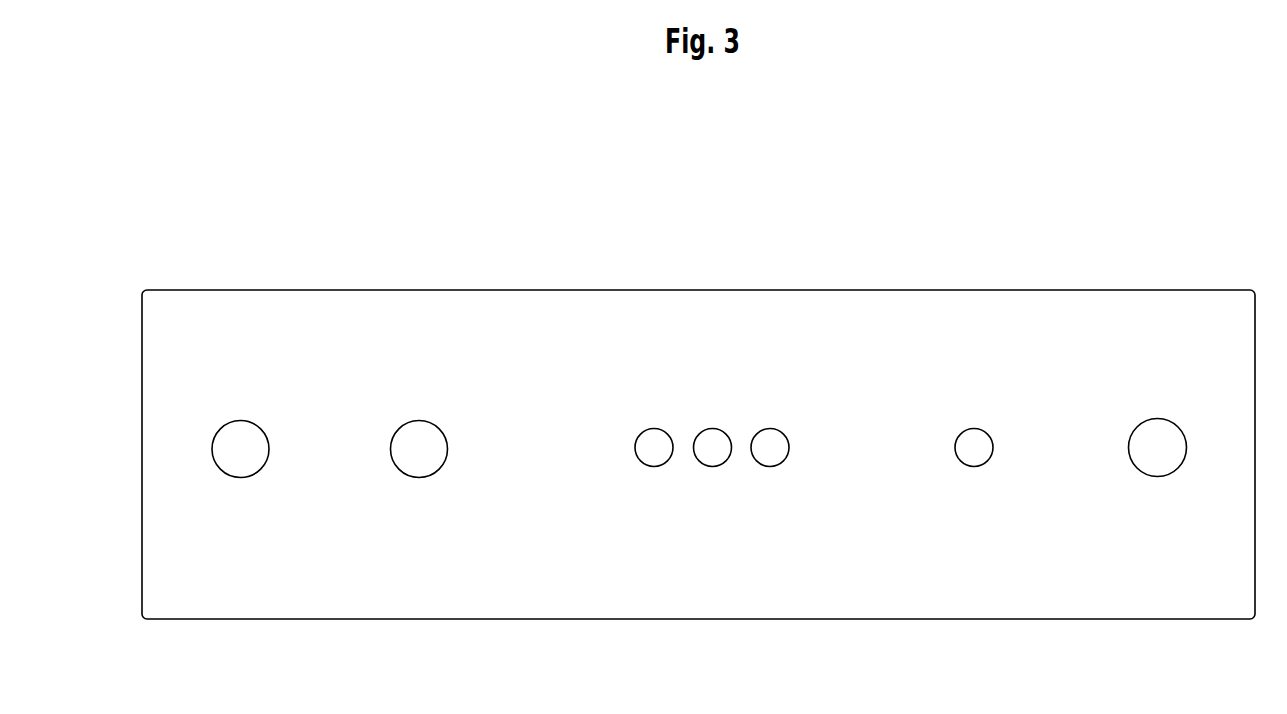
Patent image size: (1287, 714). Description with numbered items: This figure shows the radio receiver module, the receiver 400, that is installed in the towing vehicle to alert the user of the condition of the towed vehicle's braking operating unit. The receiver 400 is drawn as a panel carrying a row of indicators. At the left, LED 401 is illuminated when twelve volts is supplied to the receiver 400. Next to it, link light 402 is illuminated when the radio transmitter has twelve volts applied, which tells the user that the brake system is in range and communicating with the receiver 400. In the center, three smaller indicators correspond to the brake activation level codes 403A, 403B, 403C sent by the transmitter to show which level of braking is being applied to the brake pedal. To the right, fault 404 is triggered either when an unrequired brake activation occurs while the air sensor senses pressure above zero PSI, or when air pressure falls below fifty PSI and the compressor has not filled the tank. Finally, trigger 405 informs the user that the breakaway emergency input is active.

The receiver 400 is at (142, 290).
The LED 401 is at (238, 478).
The link light 402 is at (418, 478).
The brake activation level code 403A is at (648, 466).
The brake activation level code 403B is at (711, 467).
The brake activation level code 403C is at (778, 465).
The fault 404 is at (973, 467).
The trigger 405 is at (1157, 477).